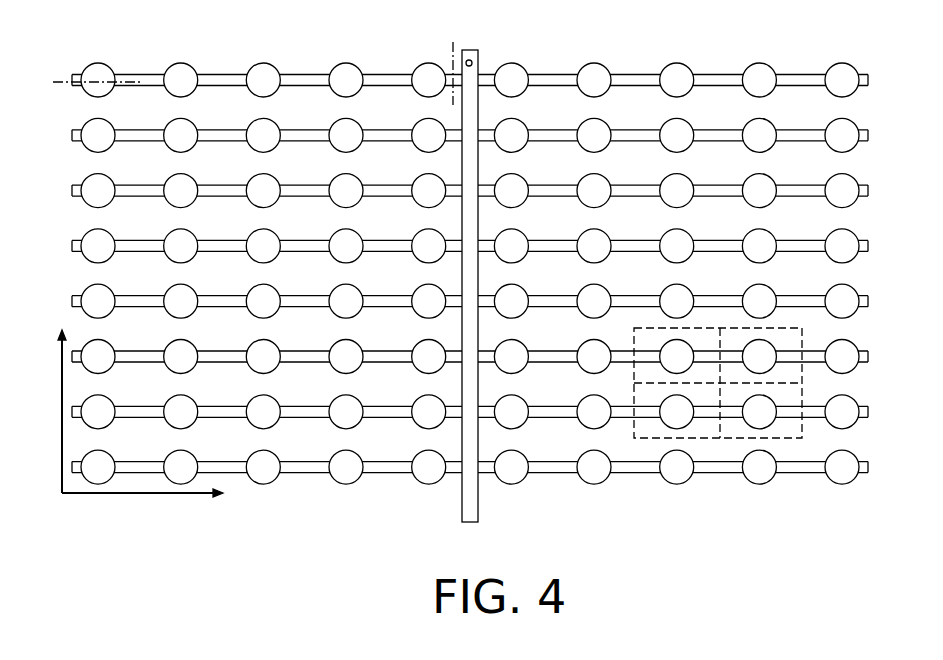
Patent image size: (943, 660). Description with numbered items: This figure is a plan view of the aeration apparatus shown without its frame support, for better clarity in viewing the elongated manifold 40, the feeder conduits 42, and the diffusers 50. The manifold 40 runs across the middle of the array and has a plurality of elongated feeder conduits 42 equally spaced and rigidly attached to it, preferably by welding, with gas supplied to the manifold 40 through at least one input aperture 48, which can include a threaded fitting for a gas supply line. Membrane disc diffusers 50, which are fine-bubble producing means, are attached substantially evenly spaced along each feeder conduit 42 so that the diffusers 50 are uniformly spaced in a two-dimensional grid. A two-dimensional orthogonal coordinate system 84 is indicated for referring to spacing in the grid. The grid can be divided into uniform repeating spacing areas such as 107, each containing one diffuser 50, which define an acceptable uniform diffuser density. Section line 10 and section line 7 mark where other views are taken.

The feeder conduit 42 is at (240, 74).
The membrane disc diffuser 50 is at (352, 65).
The input aperture 48 is at (471, 58).
The elongated manifold 40 is at (462, 518).
The spacing area 107 is at (806, 428).
The section line 10 is at (101, 63).
The section line 7 is at (456, 71).
The orthogonal coordinate system 84 is at (62, 402).